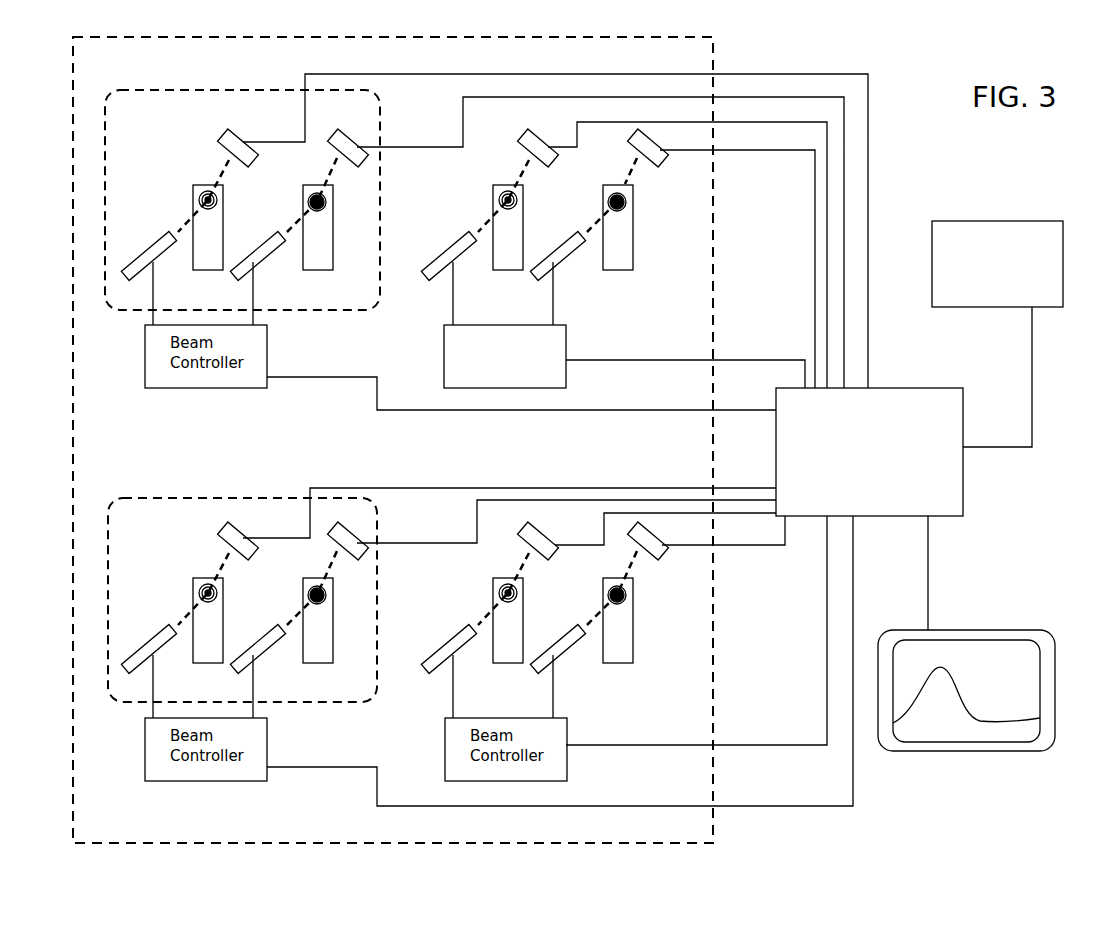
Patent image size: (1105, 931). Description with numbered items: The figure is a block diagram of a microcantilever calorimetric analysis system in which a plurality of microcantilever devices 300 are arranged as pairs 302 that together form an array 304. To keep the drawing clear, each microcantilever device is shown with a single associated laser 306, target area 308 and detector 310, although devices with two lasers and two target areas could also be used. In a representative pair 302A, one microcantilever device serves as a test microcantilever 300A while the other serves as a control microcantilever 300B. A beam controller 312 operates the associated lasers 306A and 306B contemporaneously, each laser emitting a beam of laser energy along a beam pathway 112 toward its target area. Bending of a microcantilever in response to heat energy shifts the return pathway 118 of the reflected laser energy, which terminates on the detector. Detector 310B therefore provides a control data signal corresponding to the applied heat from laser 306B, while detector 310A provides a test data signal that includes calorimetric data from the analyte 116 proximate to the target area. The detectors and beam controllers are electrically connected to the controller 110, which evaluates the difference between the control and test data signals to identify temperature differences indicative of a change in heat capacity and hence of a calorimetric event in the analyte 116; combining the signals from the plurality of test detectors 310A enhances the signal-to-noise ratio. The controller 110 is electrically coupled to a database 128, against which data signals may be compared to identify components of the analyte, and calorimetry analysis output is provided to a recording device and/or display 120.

The controller 110 is at (878, 387).
The beam pathway 112 is at (596, 220).
The analyte 116 is at (624, 208).
The return pathway 118 is at (630, 173).
The display 120 is at (955, 752).
The database 128 is at (957, 221).
The microcantilever devices 300 is at (628, 260).
The test microcantilever 300A is at (318, 252).
The control microcantilever 300B is at (210, 252).
The pairs 302 is at (176, 498).
The pair 302A is at (120, 311).
The array 304 is at (713, 63).
The laser 306 is at (558, 265).
The laser 306A is at (262, 254).
The laser 306B is at (152, 254).
The target area 308 is at (496, 191).
The detector 310 is at (659, 162).
The detector 310A is at (364, 160).
The detector 310B is at (228, 142).
The beam controller 312 is at (444, 351).